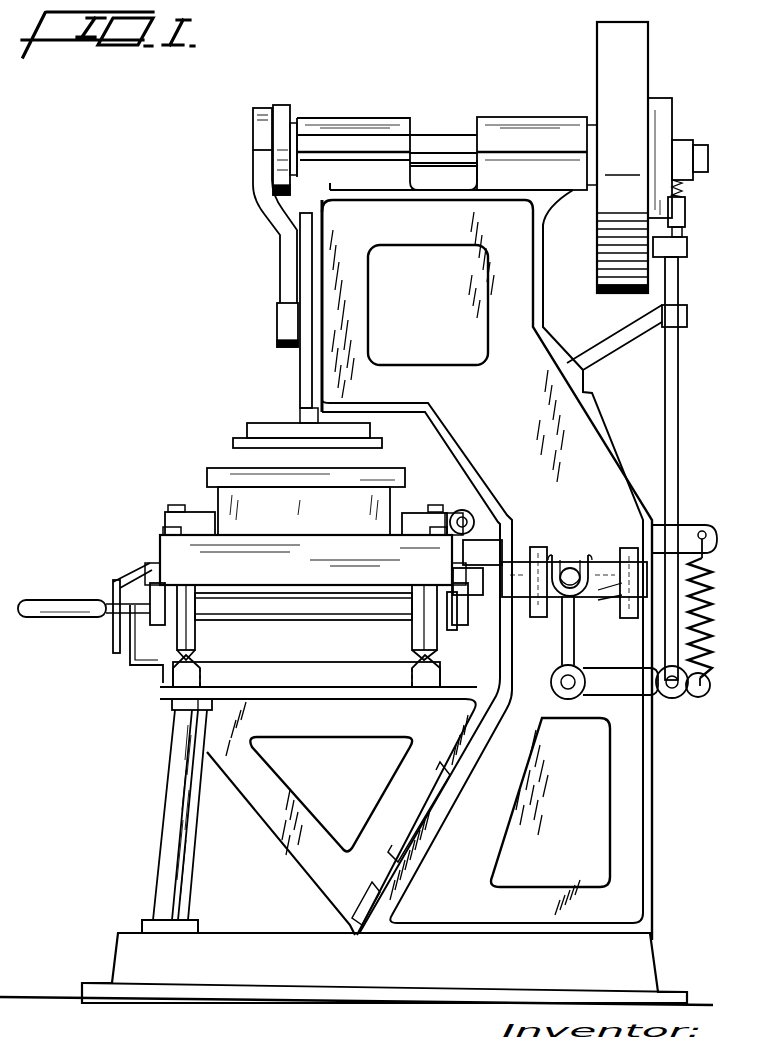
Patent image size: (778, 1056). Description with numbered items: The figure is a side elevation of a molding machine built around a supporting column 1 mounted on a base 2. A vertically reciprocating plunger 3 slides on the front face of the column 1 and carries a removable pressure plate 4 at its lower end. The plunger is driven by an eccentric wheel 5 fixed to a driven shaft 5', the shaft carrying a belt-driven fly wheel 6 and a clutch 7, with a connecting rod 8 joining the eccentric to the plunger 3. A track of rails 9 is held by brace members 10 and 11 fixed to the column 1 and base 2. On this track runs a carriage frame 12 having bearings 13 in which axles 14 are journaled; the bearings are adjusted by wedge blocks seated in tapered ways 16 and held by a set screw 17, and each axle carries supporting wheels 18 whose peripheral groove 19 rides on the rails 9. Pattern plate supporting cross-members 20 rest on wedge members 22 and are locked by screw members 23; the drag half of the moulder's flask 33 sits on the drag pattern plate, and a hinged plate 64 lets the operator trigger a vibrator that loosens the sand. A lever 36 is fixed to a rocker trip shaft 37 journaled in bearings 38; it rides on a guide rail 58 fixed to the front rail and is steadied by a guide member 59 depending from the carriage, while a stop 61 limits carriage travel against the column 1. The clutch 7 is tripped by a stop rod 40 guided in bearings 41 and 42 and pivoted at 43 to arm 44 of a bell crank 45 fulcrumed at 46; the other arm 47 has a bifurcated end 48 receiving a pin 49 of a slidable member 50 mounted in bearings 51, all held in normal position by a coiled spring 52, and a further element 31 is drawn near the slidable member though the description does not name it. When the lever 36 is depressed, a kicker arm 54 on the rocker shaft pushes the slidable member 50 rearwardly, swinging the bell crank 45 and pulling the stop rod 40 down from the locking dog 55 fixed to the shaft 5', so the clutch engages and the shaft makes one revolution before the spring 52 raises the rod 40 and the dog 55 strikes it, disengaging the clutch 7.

The supporting column 1 is at (480, 425).
The base 2 is at (384, 968).
The plunger 3 is at (300, 415).
The pressure plate 4 is at (236, 441).
The eccentric wheel 5 is at (331, 129).
The shaft 5' is at (503, 140).
The fly wheel 6 is at (622, 157).
The clutch 7 is at (658, 118).
The connecting rod 8 is at (282, 233).
The rails 9 is at (182, 670).
The supporting brace member 10 is at (324, 817).
The supporting brace member 11 is at (172, 835).
The carriage frame 12 is at (306, 560).
The bearings 13 is at (148, 617).
The axles 14 is at (333, 612).
The tapered ways 16 is at (148, 570).
The set screw 17 is at (161, 580).
The supporting wheels 18 is at (196, 650).
The groove 19 is at (196, 630).
The pattern plate supporting cross-members 20 is at (168, 518).
The wedge member 22 is at (164, 530).
The screw member 23 is at (175, 506).
The clamp 31 is at (628, 592).
The drag half of moulder's flask 33 is at (304, 511).
The lever 36 is at (36, 603).
The rocker trip shaft 37 is at (455, 515).
The bearings 38 is at (474, 520).
The stop rod 40 is at (680, 420).
The bearing 41 is at (690, 318).
The bearing 42 is at (690, 250).
The pivotal connection 43 is at (675, 698).
The arm of bell crank 44 is at (705, 692).
The bell crank 45 is at (588, 672).
The fulcrum 46 is at (568, 699).
The arm of bell crank 47 is at (562, 650).
The bifurcated end 48 is at (580, 556).
The pin 49 is at (566, 571).
The slidable member 50 is at (602, 580).
The bearings 51 is at (540, 603).
The coiled spring 52 is at (716, 600).
The kicker arm 54 is at (470, 596).
The locking dog 55 is at (688, 213).
The guide rail 58 is at (130, 646).
The guide member 59 is at (114, 583).
The stop 61 is at (482, 552).
The hinged plate 64 is at (212, 472).